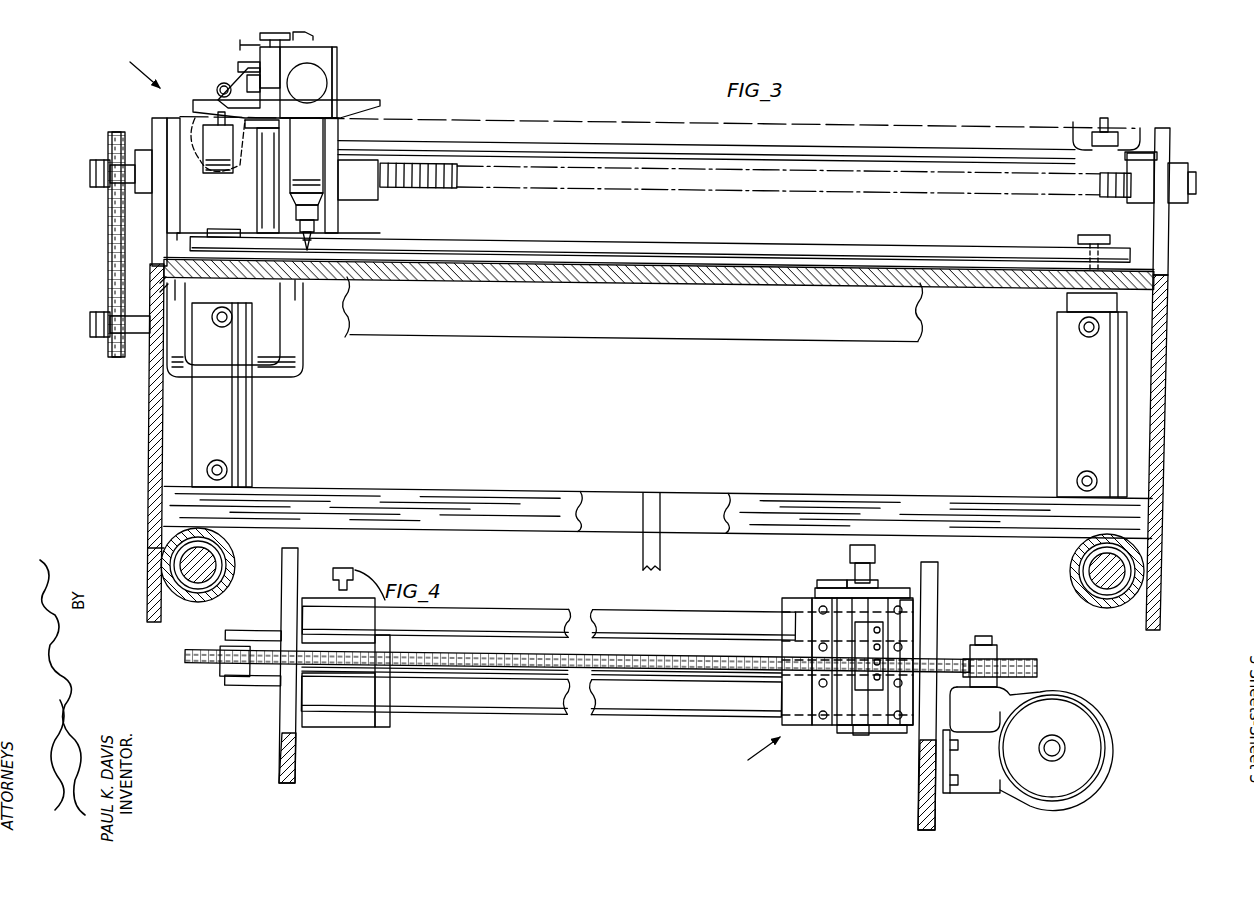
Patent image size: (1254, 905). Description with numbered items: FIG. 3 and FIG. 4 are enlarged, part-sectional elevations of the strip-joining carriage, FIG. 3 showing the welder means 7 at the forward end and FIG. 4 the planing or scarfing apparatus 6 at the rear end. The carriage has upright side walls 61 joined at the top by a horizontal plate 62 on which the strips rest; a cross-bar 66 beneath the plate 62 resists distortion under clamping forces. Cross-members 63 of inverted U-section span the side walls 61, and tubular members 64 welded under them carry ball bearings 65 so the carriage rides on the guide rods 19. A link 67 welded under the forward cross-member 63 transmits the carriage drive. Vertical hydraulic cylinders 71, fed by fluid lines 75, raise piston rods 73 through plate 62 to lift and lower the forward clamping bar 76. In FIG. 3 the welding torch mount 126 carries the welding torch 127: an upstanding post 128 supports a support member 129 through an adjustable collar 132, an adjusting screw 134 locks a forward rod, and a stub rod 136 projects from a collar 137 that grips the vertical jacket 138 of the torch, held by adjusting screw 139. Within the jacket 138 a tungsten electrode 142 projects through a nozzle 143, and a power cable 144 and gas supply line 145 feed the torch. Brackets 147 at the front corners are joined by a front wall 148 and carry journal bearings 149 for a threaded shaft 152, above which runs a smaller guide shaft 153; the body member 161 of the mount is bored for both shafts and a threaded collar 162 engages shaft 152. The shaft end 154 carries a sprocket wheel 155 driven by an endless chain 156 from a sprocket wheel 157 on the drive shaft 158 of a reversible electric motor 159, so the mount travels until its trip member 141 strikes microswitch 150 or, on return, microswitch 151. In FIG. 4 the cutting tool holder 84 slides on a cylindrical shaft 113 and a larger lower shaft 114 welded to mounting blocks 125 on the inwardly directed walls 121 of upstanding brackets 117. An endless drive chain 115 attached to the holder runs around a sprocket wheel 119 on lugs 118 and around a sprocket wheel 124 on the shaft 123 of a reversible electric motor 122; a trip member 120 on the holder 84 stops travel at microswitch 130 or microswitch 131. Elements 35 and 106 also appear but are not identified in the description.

In FIG. 4, the planing or scarfing apparatus 6 is at (755, 753).
In FIG. 3, the welder means 7 is at (136, 70).
In FIG. 3, the guide rods 19 is at (150, 548).
In FIG. 3, the pivot bearing 35 is at (327, 82).
In FIG. 3, the upright side walls 61 is at (150, 407).
In FIG. 3, the horizontal plate 62 is at (1022, 286).
In FIG. 3, the cross-members 63 is at (472, 492).
In FIG. 3, the tubular members 64 is at (180, 590).
In FIG. 3, the ball bearings 65 is at (236, 545).
In FIG. 3, the cross-bar 66 is at (720, 342).
In FIG. 3, the vertically extending link 67 is at (650, 548).
In FIG. 3, the vertical hydraulic cylinder 71 is at (246, 420).
In FIG. 3, the piston rod 73 is at (163, 282).
In FIG. 3, the hydraulic fluid lines 75 is at (222, 328).
In FIG. 3, the forward clamping bar 76 is at (470, 245).
In FIG. 4, the cutting tool holder 84 is at (800, 590).
In FIG. 4, the spacer 106 is at (862, 735).
In FIG. 4, the cylindrical shaft 113 is at (642, 614).
In FIG. 4, the lower shaft 114 is at (627, 715).
In FIG. 4, the endless drive chain 115 is at (690, 664).
In FIG. 4, the upstanding bracket 117 is at (283, 720).
In FIG. 4, the lugs 118 is at (225, 639).
In FIG. 4, the sprocket wheel 119 is at (202, 669).
In FIG. 4, the trip member 120 is at (835, 580).
In FIG. 4, the inwardly directed wall 121 is at (382, 598).
In FIG. 4, the reversible electric motor 122 is at (1084, 720).
In FIG. 4, the shaft 123 is at (984, 645).
In FIG. 4, the sprocket wheel 124 is at (1017, 660).
In FIG. 4, the mounting blocks 125 is at (302, 601).
In FIG. 3, the welding torch mount 126 is at (178, 237).
In FIG. 3, the welding torch 127 is at (332, 142).
In FIG. 3, the upstanding post 128 is at (238, 66).
In FIG. 3, the support member 129 is at (260, 52).
In FIG. 4, the microswitch 130 is at (348, 568).
In FIG. 4, the microswitch 131 is at (888, 576).
In FIG. 3, the adjustable collar 132 is at (228, 76).
In FIG. 3, the adjusting screw 134 is at (240, 45).
In FIG. 3, the stub rod 136 is at (217, 91).
In FIG. 3, the collar 137 is at (337, 60).
In FIG. 3, the jacket 138 is at (296, 165).
In FIG. 3, the adjusting screw 139 is at (330, 90).
In FIG. 3, the trip member 141 is at (338, 122).
In FIG. 3, the tungsten electrode 142 is at (306, 262).
In FIG. 3, the nozzle 143 is at (318, 240).
In FIG. 3, the electrical power cable 144 is at (313, 38).
In FIG. 3, the gas supply line 145 is at (260, 36).
In FIG. 3, the upstanding brackets 147 is at (155, 125).
In FIG. 3, the front wall 148 is at (640, 121).
In FIG. 3, the journal bearing 149 is at (118, 135).
In FIG. 3, the microswitch 150 is at (1116, 135).
In FIG. 3, the microswitch 151 is at (212, 130).
In FIG. 3, the shaft 152 is at (432, 190).
In FIG. 3, the second shaft 153 is at (502, 143).
In FIG. 3, the end of shaft 154 is at (90, 172).
In FIG. 3, the sprocket wheel 155 is at (108, 140).
In FIG. 3, the endless chain 156 is at (108, 212).
In FIG. 3, the sprocket wheel 157 is at (110, 300).
In FIG. 3, the drive shaft 158 is at (145, 337).
In FIG. 3, the reversible electric motor 159 is at (300, 364).
In FIG. 3, the body member 161 is at (190, 200).
In FIG. 3, the threaded collar 162 is at (372, 186).